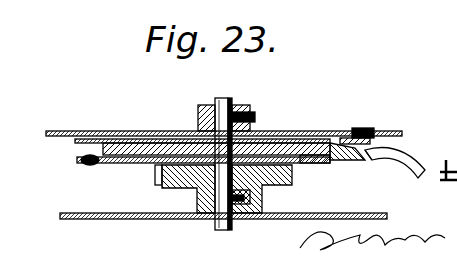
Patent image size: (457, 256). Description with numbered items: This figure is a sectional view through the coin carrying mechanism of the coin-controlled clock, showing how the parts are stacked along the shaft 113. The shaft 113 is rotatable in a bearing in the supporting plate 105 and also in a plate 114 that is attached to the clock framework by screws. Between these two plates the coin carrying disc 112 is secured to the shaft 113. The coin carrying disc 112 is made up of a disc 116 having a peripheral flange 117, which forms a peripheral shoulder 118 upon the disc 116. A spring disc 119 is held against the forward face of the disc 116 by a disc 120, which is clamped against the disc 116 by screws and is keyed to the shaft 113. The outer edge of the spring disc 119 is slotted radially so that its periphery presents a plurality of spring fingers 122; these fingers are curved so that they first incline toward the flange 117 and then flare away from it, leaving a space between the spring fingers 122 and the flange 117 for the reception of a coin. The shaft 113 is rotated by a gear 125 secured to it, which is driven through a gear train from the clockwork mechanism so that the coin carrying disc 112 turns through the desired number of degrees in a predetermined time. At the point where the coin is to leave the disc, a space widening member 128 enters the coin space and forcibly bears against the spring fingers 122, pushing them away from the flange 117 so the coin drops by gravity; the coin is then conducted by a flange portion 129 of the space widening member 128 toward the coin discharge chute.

The supporting plate 105 is at (117, 130).
The shaft 113 is at (216, 98).
The disc 120 is at (268, 165).
The spring disc 119 is at (143, 163).
The spring fingers 122 is at (92, 165).
The gear 125 is at (266, 186).
The plate 114 is at (190, 220).
The peripheral shoulder 118 is at (354, 128).
The peripheral flange 117 is at (372, 130).
The disc 116 is at (318, 150).
The coin carrying disc 112 is at (305, 166).
The flange portion 129 is at (400, 152).
The space widening member 128 is at (392, 162).